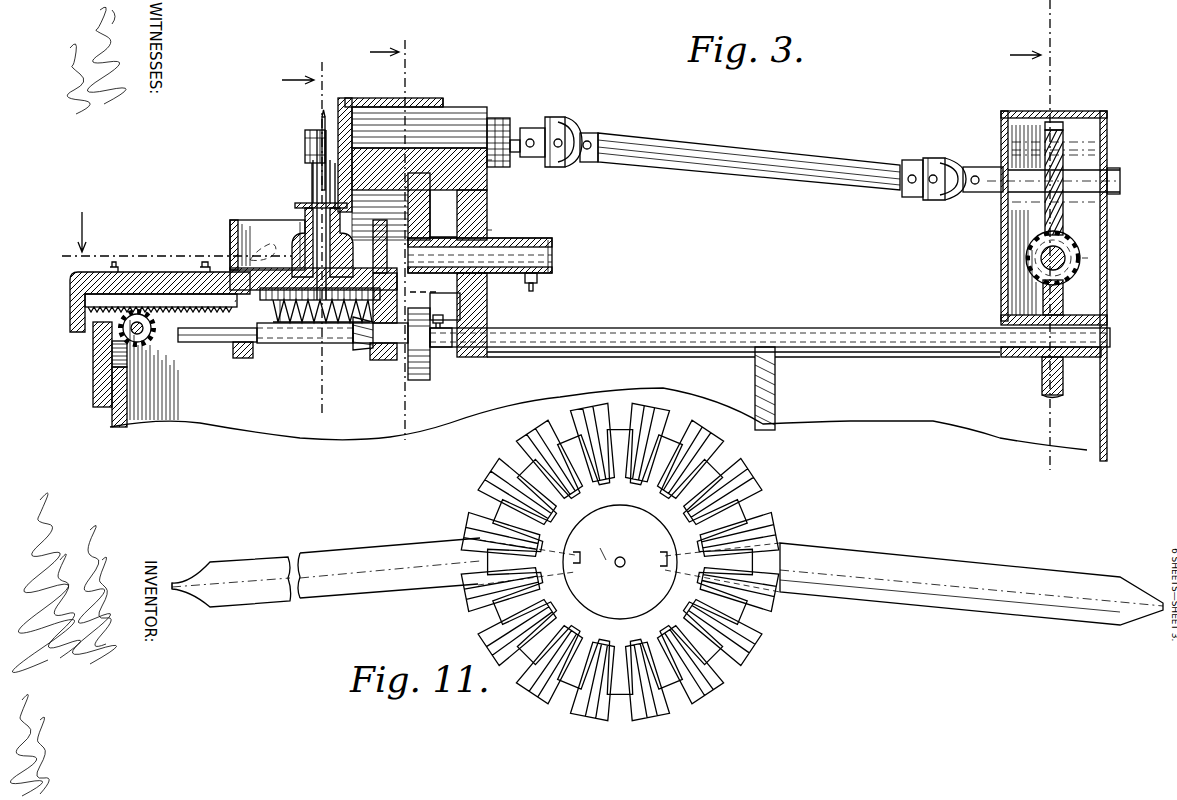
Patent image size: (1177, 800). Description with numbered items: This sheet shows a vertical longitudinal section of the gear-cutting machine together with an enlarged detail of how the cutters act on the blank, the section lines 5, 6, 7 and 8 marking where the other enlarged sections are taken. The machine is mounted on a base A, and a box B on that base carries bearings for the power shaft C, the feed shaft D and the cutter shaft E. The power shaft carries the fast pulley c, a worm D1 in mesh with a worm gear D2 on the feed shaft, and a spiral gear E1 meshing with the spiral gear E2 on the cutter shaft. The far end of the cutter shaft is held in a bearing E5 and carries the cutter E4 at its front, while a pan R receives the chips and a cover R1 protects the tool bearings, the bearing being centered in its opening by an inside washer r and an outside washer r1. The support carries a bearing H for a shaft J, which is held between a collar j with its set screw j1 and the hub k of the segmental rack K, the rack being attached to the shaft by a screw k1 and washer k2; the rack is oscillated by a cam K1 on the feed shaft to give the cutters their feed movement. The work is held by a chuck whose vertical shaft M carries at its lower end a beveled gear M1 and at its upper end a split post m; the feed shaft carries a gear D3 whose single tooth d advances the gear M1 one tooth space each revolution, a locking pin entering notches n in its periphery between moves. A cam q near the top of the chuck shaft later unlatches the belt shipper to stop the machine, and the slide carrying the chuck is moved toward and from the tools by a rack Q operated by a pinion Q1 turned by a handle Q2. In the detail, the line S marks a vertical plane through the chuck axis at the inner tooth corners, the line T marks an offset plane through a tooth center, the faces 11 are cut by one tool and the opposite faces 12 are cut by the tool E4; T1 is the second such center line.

In FIG. 3, the tooth 5 is at (256, 257).
In FIG. 3, the tooth 6 is at (304, 235).
In FIG. 3, the tooth 7 is at (390, 232).
In FIG. 3, the tooth 8 is at (1032, 241).
In FIG. 11, the lateral faces of the teeth 11 is at (770, 605).
In FIG. 11, the lateral faces of the teeth 12 is at (500, 465).
In FIG. 3, the base A is at (598, 398).
In FIG. 3, the box B is at (1060, 118).
In FIG. 3, the power shaft C is at (554, 133).
In FIG. 3, the fast pulley c is at (952, 171).
In FIG. 3, the feed shaft D is at (934, 347).
In FIG. 3, the worm D1 is at (1030, 262).
In FIG. 3, the worm gear D2 is at (1022, 377).
In FIG. 3, the gear D3 is at (360, 352).
In FIG. 3, the single tooth d is at (368, 348).
In FIG. 3, the cutter shaft E is at (772, 158).
In FIG. 3, the spiral gear E1 is at (1040, 283).
In FIG. 3, the spiral gear E2 is at (1000, 138).
In FIG. 3, the cutter E4 is at (315, 130).
In FIG. 11, the cutter E4 is at (362, 548).
In FIG. 3, the bearing E5 is at (470, 122).
In FIG. 3, the bearing H is at (508, 218).
In FIG. 3, the shaft J is at (556, 256).
In FIG. 3, the collar j is at (552, 296).
In FIG. 3, the set screw j1 is at (530, 290).
In FIG. 3, the segmental rack K is at (419, 252).
In FIG. 3, the cam K1 is at (432, 380).
In FIG. 3, the hub k is at (500, 180).
In FIG. 3, the screw k1 is at (380, 215).
In FIG. 3, the washer k2 is at (430, 300).
In FIG. 3, the vertical shaft M is at (313, 215).
In FIG. 3, the beveled gear M1 is at (300, 325).
In FIG. 3, the split post m is at (292, 198).
In FIG. 3, the notches n is at (268, 325).
In FIG. 3, the rack Q is at (150, 340).
In FIG. 3, the pinion Q1 is at (93, 350).
In FIG. 3, the handle Q2 is at (258, 220).
In FIG. 3, the cam q is at (282, 230).
In FIG. 3, the pan R is at (247, 243).
In FIG. 3, the cover R1 is at (440, 98).
In FIG. 3, the inside washer r is at (360, 100).
In FIG. 3, the outside washer r1 is at (325, 112).
In FIG. 11, the line S— S is at (612, 567).
In FIG. 11, the line T— T is at (650, 556).
In FIG. 11, the blade tip T1 is at (172, 584).